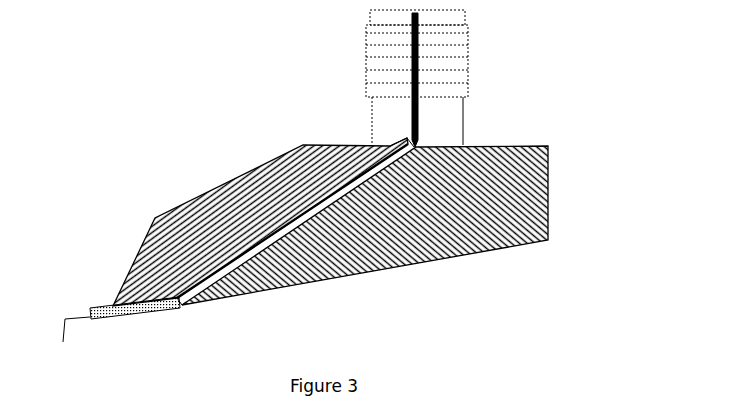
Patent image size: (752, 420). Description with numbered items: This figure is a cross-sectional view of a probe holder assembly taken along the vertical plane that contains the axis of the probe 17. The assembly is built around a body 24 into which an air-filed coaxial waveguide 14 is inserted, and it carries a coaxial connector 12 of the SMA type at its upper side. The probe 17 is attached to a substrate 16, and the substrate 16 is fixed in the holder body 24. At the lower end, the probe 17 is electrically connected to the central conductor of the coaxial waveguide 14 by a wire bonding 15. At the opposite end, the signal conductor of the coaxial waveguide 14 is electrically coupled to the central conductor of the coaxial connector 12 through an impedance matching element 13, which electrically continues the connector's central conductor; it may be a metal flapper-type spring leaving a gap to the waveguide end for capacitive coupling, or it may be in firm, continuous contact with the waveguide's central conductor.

The coaxial connector 12 is at (447, 63).
The impedance matching element 13 is at (425, 140).
The air-filed coaxial waveguide 14 is at (238, 178).
The wire bonding 15 is at (186, 307).
The substrate 16 is at (116, 306).
The probe 17 is at (73, 315).
The body 24 is at (503, 199).